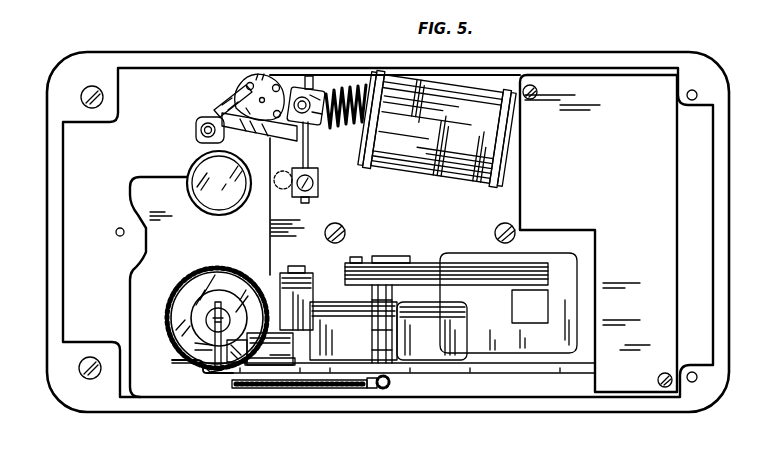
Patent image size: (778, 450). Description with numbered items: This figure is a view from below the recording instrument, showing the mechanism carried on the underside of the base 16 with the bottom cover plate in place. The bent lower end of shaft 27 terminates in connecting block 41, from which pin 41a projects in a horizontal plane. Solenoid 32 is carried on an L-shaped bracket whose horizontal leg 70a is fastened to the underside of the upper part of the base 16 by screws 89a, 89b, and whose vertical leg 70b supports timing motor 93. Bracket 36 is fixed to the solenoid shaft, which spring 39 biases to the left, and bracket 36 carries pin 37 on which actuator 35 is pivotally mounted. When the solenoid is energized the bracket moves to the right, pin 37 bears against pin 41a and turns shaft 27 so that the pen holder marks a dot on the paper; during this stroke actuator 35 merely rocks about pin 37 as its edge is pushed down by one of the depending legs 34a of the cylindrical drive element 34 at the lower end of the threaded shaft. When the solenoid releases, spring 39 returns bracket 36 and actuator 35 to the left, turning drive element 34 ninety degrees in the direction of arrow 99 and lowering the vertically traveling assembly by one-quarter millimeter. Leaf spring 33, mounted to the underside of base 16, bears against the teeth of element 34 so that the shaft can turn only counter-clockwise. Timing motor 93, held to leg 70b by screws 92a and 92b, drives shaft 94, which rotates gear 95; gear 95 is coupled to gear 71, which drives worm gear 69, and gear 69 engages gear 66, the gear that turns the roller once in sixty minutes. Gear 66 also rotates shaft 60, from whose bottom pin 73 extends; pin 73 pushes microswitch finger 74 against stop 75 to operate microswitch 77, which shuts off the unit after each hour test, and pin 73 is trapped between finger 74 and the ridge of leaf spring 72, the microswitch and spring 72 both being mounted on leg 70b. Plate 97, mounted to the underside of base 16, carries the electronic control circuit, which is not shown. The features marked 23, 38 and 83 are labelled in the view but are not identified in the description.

The base 16 is at (727, 182).
The circular opening 23 is at (192, 184).
The shaft 27 is at (287, 206).
The solenoid 32 is at (435, 175).
The leaf spring 33 is at (196, 124).
The cylindrical drive element 34 is at (258, 80).
The depending legs 34a is at (244, 85).
The actuator 35 is at (262, 128).
The bracket 36 is at (342, 92).
The pin 37 is at (304, 95).
The coil winding 38 is at (366, 116).
The spring 39 is at (375, 98).
The connecting block 41 is at (310, 192).
The pin 41a is at (310, 78).
The shaft 60 is at (222, 270).
The gear 66 is at (215, 268).
The worm gear 69 is at (285, 290).
The horizontal leg 70a is at (488, 82).
The vertical leg 70b is at (556, 374).
The gear 71 is at (325, 390).
The leaf spring 72 is at (174, 361).
The pin 73 is at (203, 368).
The microswitch finger 74 is at (193, 343).
The stop 75 is at (235, 362).
The microswitch 77 is at (265, 366).
The plate edge 83 is at (156, 290).
The screw 89a is at (342, 226).
The screw 89b is at (510, 226).
The screw 92a is at (395, 380).
The screw 92b is at (400, 258).
The timing motor 93 is at (568, 322).
The shaft 94 is at (362, 350).
The gear 95 is at (380, 390).
The plate 97 is at (628, 100).
The arrow 99 is at (255, 62).